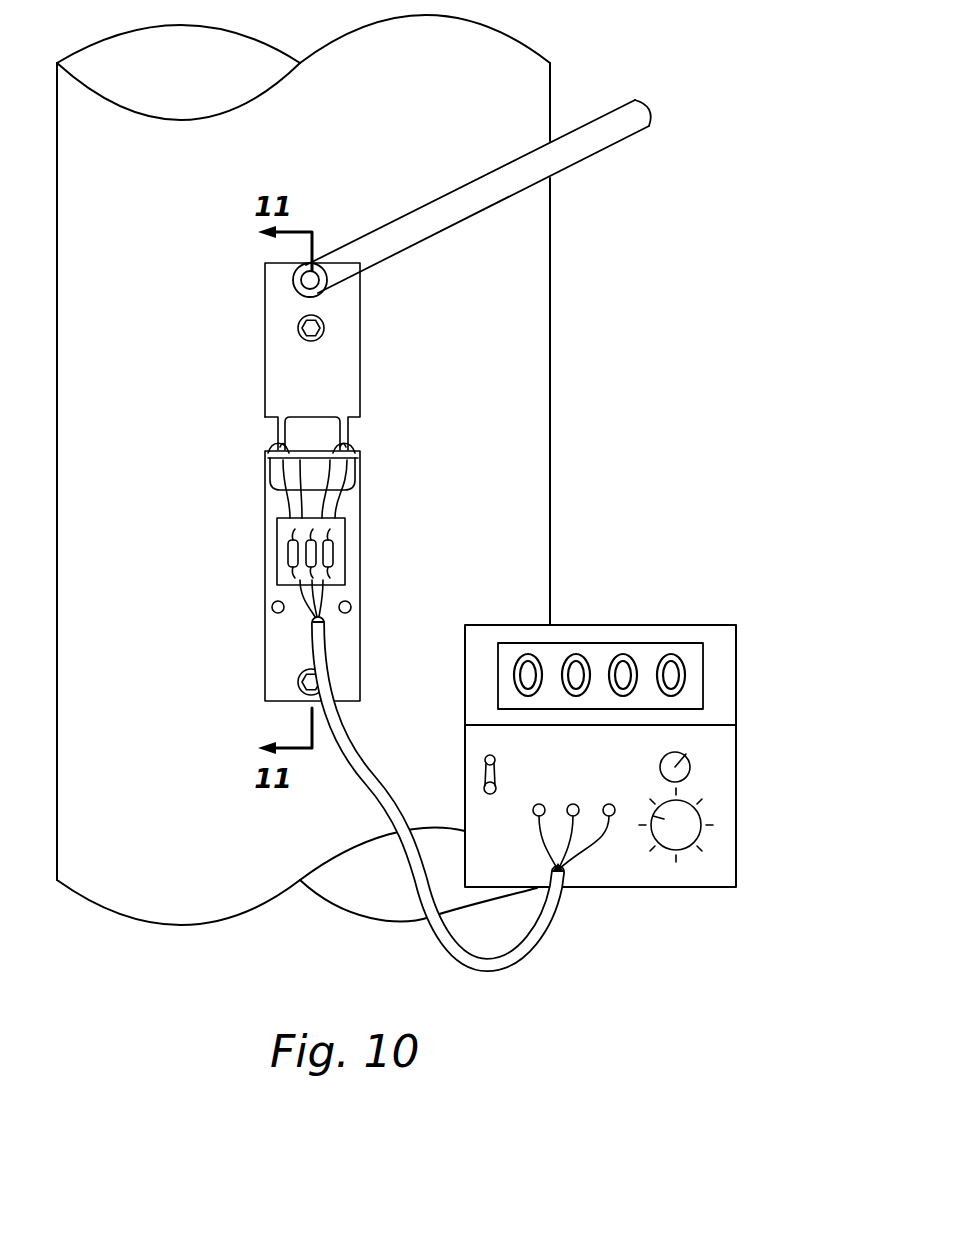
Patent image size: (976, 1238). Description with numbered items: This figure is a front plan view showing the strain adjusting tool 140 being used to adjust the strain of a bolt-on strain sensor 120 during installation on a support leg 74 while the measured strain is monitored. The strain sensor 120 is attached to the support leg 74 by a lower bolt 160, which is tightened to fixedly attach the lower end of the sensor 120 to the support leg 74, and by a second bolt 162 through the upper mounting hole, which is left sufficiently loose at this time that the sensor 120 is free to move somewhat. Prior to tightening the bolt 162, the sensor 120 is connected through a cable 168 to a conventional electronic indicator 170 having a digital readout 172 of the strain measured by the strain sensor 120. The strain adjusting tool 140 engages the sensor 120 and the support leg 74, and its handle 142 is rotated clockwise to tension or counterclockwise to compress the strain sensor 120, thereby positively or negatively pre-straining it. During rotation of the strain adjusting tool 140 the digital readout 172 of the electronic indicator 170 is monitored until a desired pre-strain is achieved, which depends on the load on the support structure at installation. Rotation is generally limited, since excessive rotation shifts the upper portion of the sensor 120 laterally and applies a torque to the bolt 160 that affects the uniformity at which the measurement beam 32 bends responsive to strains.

The support leg 74 is at (532, 536).
The strain adjusting tool 140 is at (472, 159).
The handle 142 is at (418, 218).
The bolt 162 is at (325, 333).
The measurement beam 32 is at (282, 438).
The strain sensor 120 is at (348, 540).
The bolt 160 is at (298, 683).
The electronic indicator 170 is at (654, 708).
The digital readout 172 is at (697, 678).
The cable 168 is at (543, 943).